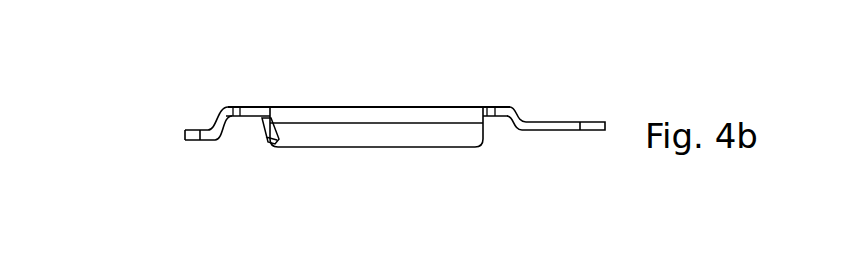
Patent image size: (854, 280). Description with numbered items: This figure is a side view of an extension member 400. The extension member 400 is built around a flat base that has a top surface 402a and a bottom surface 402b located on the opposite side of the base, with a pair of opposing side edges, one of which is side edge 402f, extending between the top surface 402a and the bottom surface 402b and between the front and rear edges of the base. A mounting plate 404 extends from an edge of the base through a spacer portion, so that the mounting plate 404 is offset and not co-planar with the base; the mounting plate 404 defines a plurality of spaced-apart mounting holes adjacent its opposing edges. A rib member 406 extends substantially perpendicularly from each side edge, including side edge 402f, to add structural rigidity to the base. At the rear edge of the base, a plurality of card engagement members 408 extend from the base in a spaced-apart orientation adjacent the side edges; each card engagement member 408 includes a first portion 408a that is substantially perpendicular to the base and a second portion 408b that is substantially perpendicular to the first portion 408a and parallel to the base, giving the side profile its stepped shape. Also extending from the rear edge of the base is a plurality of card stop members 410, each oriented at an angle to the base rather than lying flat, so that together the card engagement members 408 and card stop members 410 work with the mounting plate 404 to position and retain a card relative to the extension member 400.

The extension member 400 is at (118, 102).
The side edge 402f is at (345, 106).
The bottom surface 402b is at (423, 106).
The top surface 402a is at (497, 122).
The mounting plate 404 is at (570, 132).
The rib member 406 is at (383, 137).
The card engagement member 408 is at (186, 149).
The first portion 408a is at (213, 122).
The second portion 408b is at (204, 141).
The card stop member 410 is at (262, 140).